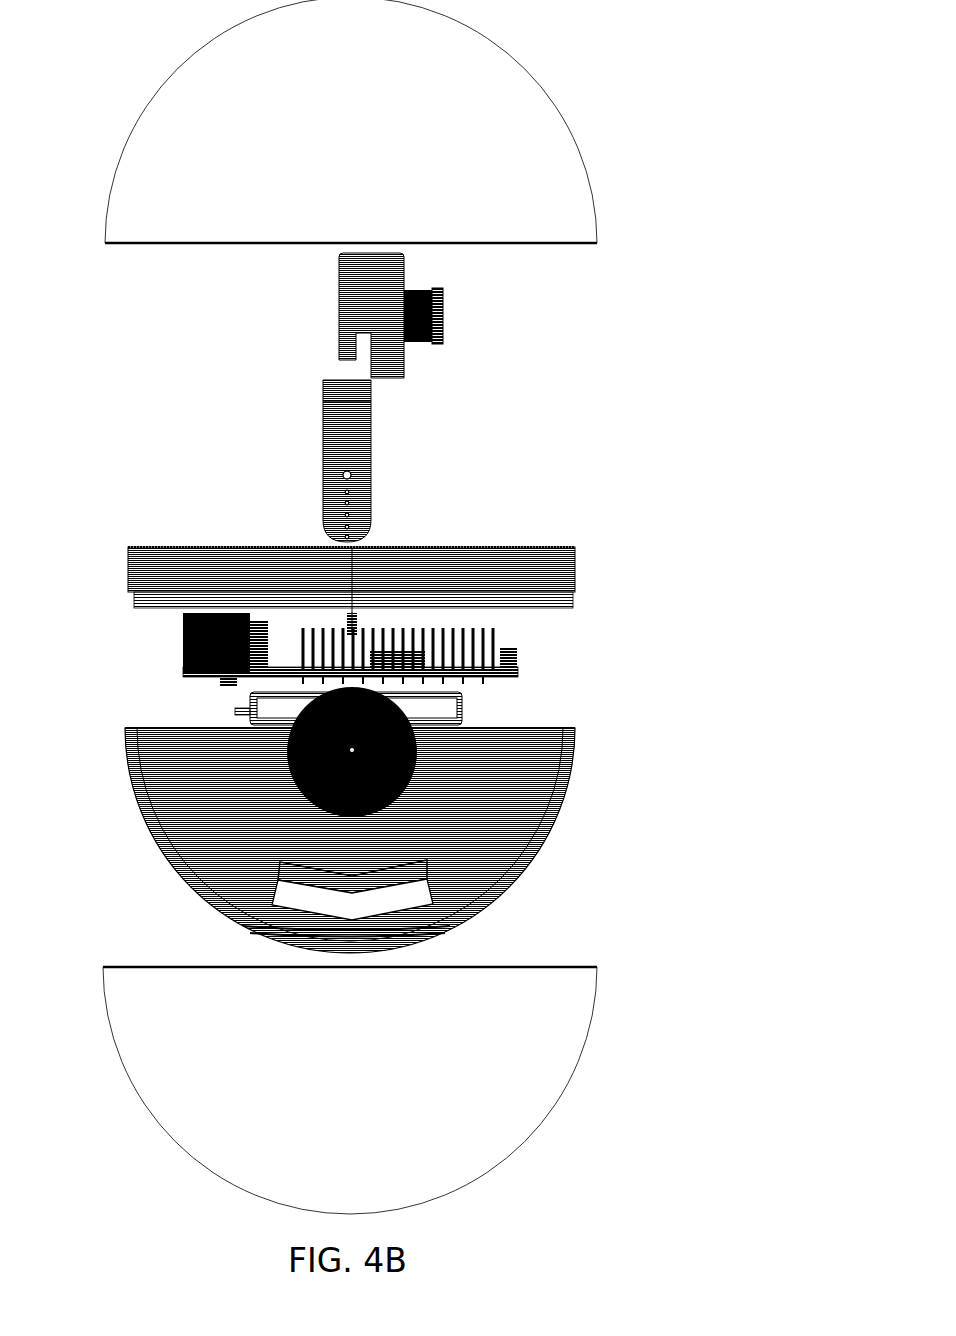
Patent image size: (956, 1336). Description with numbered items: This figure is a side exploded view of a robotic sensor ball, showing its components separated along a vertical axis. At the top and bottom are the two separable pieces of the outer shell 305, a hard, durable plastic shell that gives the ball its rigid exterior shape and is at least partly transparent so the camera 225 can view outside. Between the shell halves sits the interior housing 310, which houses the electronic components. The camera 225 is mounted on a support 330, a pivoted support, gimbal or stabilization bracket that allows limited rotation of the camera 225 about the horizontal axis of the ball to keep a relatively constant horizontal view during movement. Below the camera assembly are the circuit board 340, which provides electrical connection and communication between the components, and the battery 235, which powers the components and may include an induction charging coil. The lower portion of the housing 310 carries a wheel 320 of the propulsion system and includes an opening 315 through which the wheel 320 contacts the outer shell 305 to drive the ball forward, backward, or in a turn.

The outer shell 305 is at (575, 151).
The camera 225 is at (443, 293).
The support 330 is at (322, 393).
The housing 310 is at (567, 562).
The circuit board 340 is at (519, 669).
The battery 235 is at (462, 713).
The wheels 320 is at (390, 802).
The openings 315 is at (433, 905).